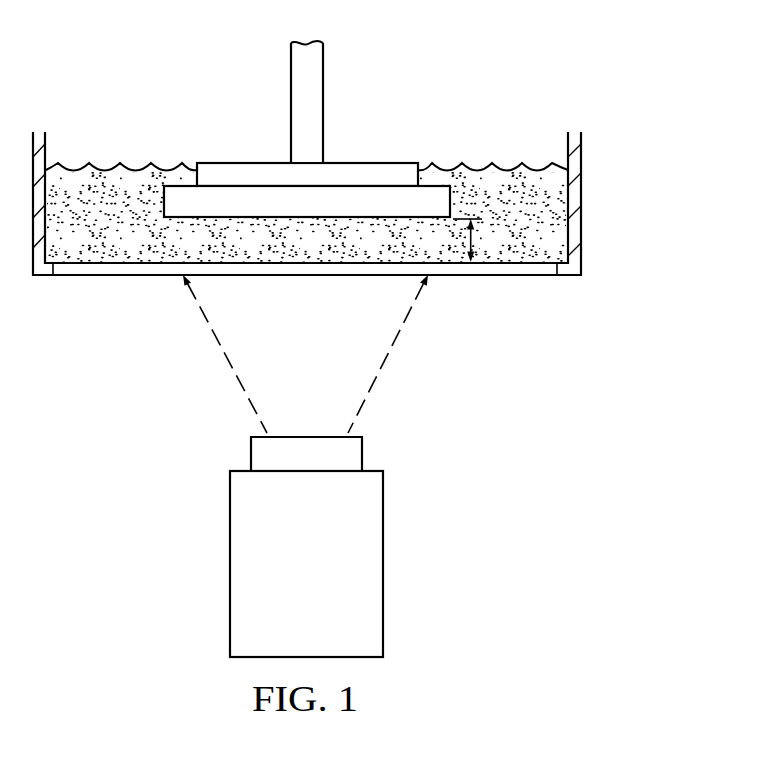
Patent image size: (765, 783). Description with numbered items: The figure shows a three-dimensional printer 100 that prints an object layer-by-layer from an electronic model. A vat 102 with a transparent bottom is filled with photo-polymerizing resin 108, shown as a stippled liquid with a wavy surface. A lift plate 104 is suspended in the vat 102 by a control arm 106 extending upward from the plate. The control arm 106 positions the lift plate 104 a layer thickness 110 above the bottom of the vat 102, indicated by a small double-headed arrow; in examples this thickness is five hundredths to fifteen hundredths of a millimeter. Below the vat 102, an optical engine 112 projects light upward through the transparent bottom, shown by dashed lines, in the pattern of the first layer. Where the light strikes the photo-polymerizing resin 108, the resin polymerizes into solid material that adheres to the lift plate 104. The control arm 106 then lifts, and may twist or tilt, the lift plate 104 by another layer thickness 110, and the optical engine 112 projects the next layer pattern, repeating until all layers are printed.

The three-dimensional printer 100 is at (152, 59).
The vat 102 is at (582, 197).
The lift plate 104 is at (265, 168).
The control arm 106 is at (325, 106).
The photo-polymerizing resin 108 is at (105, 177).
The layer thickness 110 is at (473, 240).
The optical engine 112 is at (230, 563).